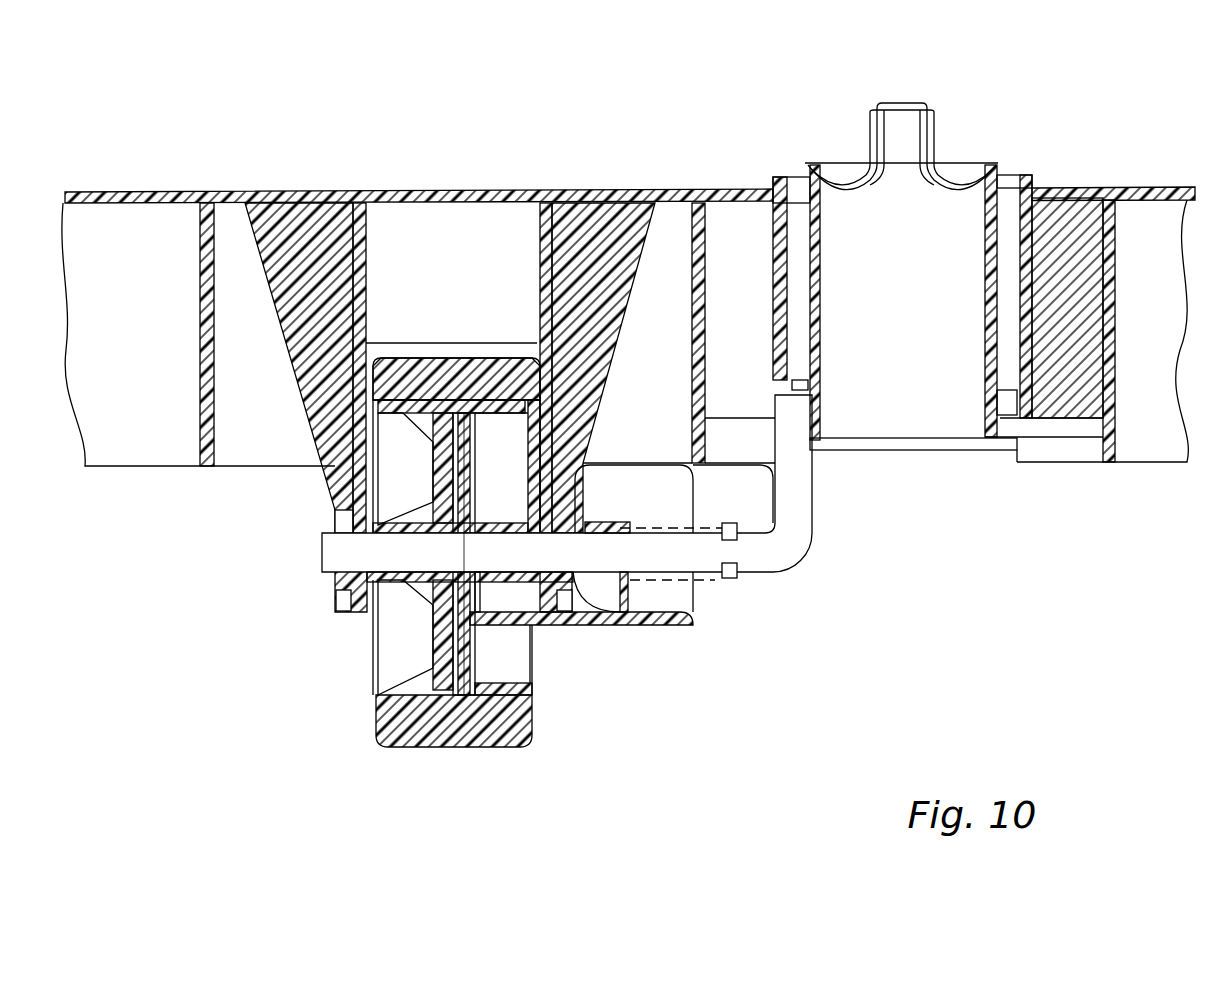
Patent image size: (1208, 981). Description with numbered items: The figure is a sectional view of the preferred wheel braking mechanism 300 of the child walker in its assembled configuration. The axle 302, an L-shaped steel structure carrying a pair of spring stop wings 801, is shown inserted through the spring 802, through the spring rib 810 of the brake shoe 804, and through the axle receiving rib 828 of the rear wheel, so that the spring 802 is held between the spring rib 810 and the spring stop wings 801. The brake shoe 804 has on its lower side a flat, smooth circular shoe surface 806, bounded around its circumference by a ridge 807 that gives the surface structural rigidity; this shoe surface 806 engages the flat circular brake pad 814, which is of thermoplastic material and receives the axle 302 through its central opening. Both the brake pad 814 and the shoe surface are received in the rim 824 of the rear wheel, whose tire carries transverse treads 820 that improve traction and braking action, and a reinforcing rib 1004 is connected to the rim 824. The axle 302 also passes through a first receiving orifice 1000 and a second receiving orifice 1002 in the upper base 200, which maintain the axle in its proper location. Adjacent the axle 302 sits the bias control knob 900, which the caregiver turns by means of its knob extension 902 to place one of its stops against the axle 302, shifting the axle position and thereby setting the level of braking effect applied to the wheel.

The upper base 200 is at (362, 190).
The wheel braking mechanism 300 is at (978, 648).
The axle 302 is at (808, 555).
The spring stop wings 801 is at (737, 575).
The spring 802 is at (710, 522).
The brake shoe 804 is at (670, 625).
The circular shoe surface 806 is at (467, 668).
The ridge 807 is at (530, 688).
The spring rib 810 is at (603, 522).
The brake pad 814 is at (463, 675).
The transverse treads 820 is at (397, 740).
The rim 824 is at (420, 405).
The axle receiving rib 828 is at (385, 585).
The bias control knob 900 is at (967, 163).
The knob extension 902 is at (910, 103).
The first receiving orifice 1000 is at (333, 577).
The second receiving orifice 1002 is at (618, 613).
The reinforcing rib 1004 is at (425, 438).